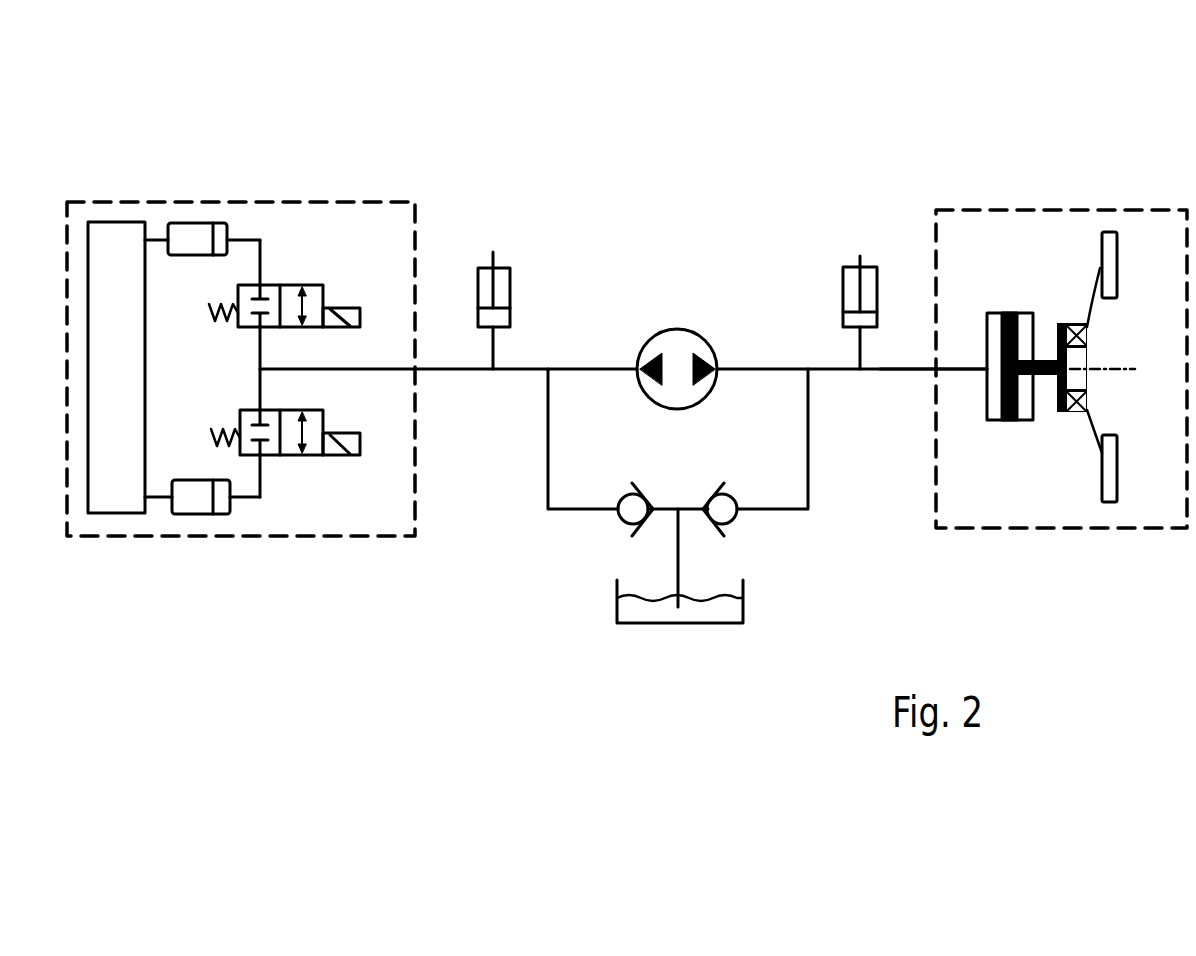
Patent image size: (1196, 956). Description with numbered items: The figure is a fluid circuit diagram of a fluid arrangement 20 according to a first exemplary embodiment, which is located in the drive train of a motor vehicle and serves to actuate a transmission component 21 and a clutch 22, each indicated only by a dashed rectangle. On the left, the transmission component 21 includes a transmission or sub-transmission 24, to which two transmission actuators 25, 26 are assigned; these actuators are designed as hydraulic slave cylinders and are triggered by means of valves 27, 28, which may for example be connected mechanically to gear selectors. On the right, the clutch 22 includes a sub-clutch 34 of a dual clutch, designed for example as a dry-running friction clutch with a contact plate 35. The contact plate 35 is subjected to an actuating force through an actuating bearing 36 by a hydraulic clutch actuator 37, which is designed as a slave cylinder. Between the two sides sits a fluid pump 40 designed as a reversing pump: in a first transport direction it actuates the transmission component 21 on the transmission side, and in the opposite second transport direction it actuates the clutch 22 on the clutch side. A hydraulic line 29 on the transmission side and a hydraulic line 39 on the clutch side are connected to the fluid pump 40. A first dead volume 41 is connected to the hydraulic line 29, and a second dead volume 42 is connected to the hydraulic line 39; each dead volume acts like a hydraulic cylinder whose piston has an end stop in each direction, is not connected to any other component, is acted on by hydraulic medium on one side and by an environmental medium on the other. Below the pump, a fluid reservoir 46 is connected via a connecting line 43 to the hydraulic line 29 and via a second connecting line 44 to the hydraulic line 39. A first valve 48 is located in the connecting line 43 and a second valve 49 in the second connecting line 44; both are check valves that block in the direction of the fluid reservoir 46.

The fluid arrangement 20 is at (1126, 111).
The transmission component 21 is at (241, 348).
The clutch 22 is at (1061, 348).
The transmission 24 is at (116, 367).
The transmission actuator 25 is at (193, 223).
The transmission actuator 26 is at (192, 515).
The valve 27 is at (296, 285).
The valve 28 is at (312, 455).
The hydraulic line 29 is at (470, 373).
The sub-clutch 34 is at (1132, 355).
The contact plate 35 is at (1110, 503).
The actuating bearing 36 is at (1075, 413).
The hydraulic clutch actuator 37 is at (997, 422).
The hydraulic line 39 is at (897, 372).
The fluid pump 40 is at (673, 325).
The first dead volume 41 is at (512, 318).
The second dead volume 42 is at (841, 316).
The connecting line 43 is at (560, 512).
The second connecting line 44 is at (790, 512).
The fluid reservoir 46 is at (658, 624).
The first valve 48 is at (625, 520).
The second valve 49 is at (735, 520).